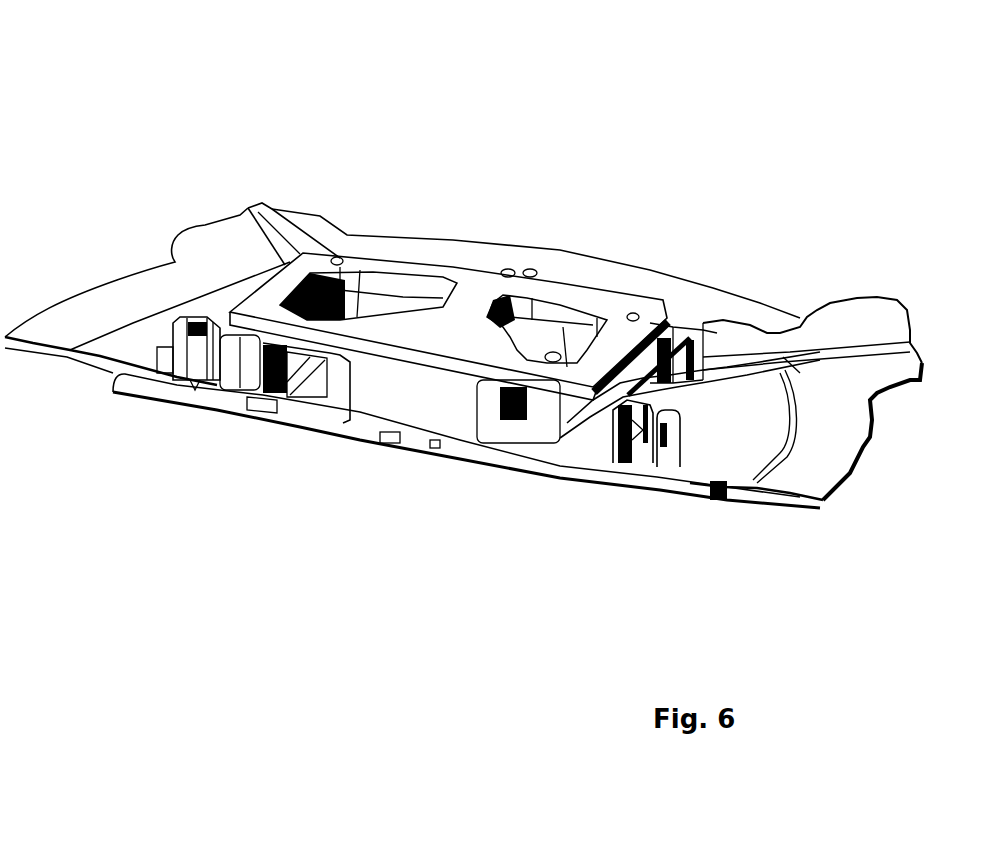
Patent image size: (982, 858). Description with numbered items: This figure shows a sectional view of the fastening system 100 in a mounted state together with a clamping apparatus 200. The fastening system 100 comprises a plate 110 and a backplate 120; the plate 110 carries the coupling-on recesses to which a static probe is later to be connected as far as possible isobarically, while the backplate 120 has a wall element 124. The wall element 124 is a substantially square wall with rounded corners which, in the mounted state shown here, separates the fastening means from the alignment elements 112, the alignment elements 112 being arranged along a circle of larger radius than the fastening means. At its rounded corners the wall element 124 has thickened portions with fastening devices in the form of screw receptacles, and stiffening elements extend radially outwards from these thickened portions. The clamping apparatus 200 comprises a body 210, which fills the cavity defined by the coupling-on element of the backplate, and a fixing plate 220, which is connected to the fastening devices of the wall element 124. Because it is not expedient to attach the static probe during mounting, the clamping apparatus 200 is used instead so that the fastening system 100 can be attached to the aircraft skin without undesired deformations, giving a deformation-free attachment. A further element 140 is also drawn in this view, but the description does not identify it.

The fastening system 100 is at (226, 205).
The plate 110 is at (598, 478).
The alignment elements 112 is at (640, 457).
The backplate 120 is at (713, 286).
The wall element 124 is at (682, 329).
The latch 140 is at (683, 434).
The clamping apparatus 200 is at (338, 380).
The body 210 is at (398, 400).
The fixing plate 220 is at (464, 328).